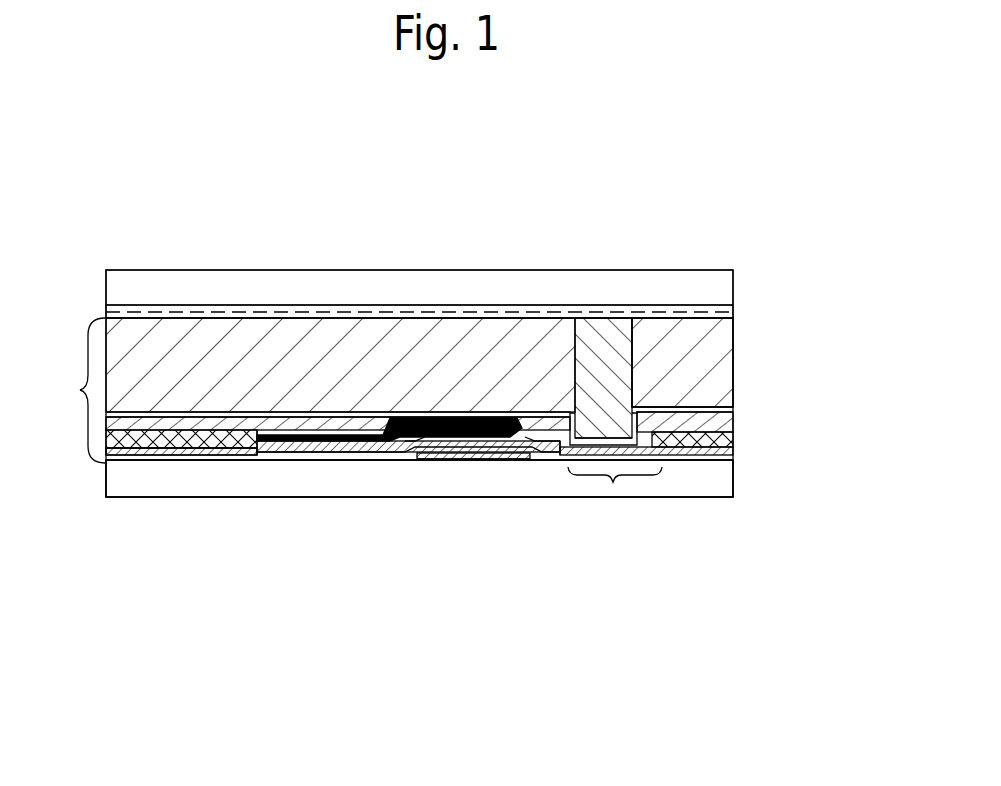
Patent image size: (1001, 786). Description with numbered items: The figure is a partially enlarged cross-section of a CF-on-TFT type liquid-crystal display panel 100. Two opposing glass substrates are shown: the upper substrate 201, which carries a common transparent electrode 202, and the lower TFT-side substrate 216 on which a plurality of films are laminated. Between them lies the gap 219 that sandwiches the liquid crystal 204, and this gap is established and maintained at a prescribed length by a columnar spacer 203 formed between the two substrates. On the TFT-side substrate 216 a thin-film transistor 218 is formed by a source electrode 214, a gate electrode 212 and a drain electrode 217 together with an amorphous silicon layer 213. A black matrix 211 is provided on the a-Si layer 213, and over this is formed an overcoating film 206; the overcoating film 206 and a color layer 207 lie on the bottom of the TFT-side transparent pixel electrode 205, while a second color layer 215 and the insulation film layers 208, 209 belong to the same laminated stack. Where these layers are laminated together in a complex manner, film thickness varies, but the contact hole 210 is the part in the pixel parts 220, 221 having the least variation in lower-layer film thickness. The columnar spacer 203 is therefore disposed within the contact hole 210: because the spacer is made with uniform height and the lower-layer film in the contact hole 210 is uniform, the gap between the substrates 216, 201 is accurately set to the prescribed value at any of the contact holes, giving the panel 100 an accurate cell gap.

The liquid-crystal display panel 100 is at (137, 148).
The substrate 201 is at (192, 284).
The common transparent electrode 202 is at (232, 305).
The columnar spacer 203 is at (607, 353).
The liquid crystal 204 is at (478, 335).
The transparent pixel electrode 205 is at (705, 412).
The overcoating film 206 is at (722, 422).
The color layer 207 is at (727, 440).
The insulation film layer 208 is at (732, 450).
The insulation film layer 209 is at (127, 462).
The contact hole 210 is at (613, 483).
The black matrix 211 is at (495, 462).
The gate electrode 212 is at (475, 460).
The amorphous silicon layer 213 is at (430, 462).
The source electrode 214 is at (334, 450).
The color layer 215 is at (156, 452).
The substrate 216 is at (223, 478).
The drain electrode 217 is at (543, 455).
The thin-film transistor 218 is at (450, 470).
The gap 219 is at (63, 390).
The pixel part 220 is at (300, 333).
The pixel part 221 is at (700, 335).